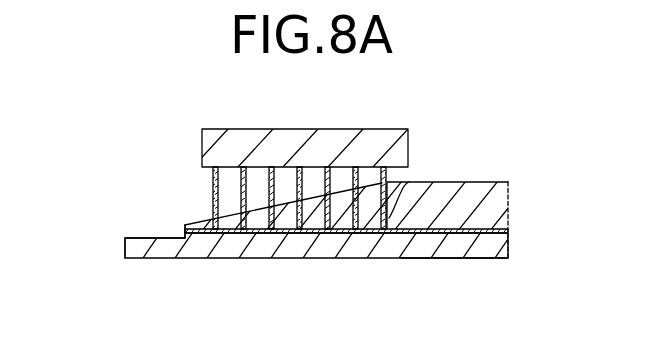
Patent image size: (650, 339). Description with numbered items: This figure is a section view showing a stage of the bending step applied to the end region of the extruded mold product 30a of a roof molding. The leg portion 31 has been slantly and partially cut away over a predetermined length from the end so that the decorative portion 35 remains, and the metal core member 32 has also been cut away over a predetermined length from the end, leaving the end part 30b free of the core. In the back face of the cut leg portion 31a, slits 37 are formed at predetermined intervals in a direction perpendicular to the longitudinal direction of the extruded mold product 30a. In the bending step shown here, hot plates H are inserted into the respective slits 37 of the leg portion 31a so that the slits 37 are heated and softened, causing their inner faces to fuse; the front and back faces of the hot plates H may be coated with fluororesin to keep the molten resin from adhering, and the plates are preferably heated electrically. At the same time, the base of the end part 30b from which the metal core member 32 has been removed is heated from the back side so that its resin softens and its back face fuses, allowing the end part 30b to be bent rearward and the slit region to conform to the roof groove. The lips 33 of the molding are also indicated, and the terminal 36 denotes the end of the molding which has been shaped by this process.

The extruded mold product 30a is at (482, 170).
The end part 30b is at (130, 238).
The leg portion 31 is at (508, 207).
The leg portion which has undergone the cutting operation 31a is at (205, 225).
The metal core member 32 is at (420, 236).
The lips 33 is at (497, 181).
The decorative portion 35 is at (125, 251).
The terminal 36 is at (480, 258).
The slits 37 is at (213, 212).
The hot plates H is at (206, 177).